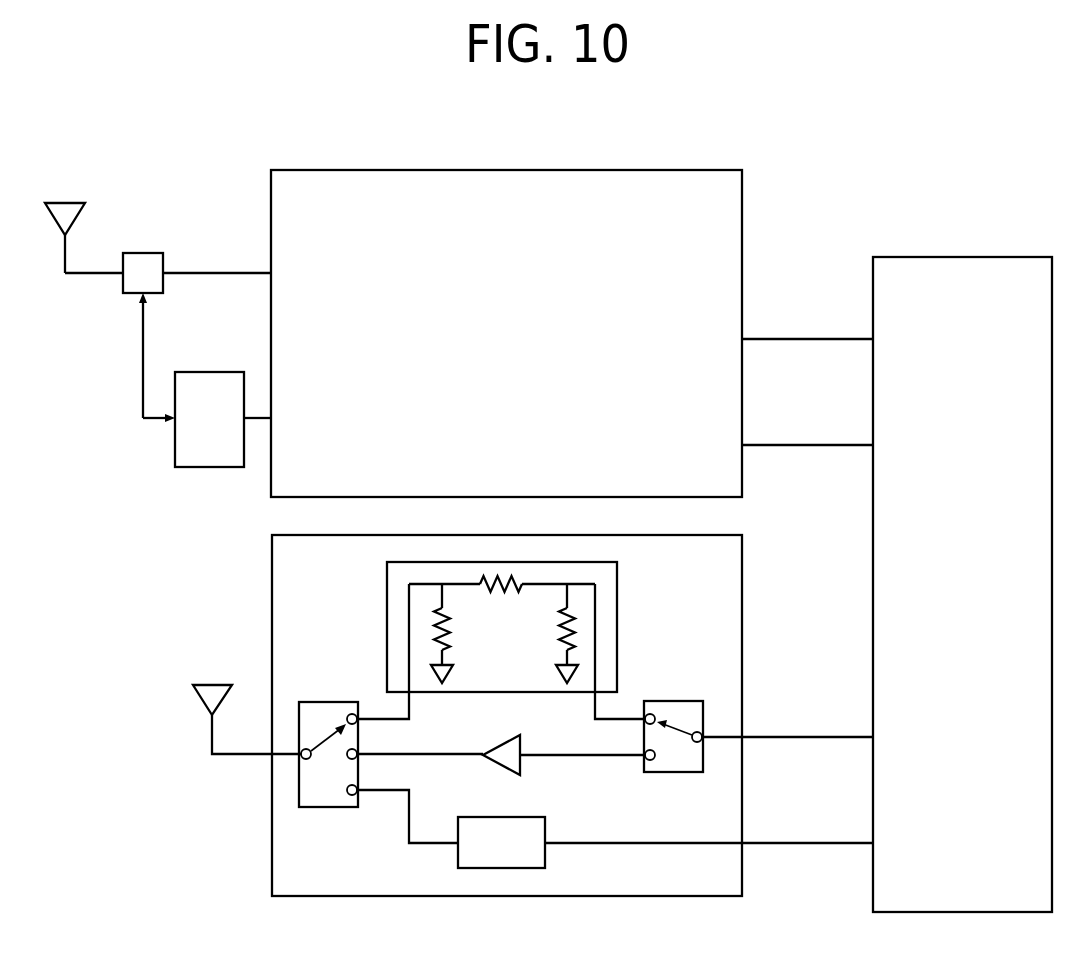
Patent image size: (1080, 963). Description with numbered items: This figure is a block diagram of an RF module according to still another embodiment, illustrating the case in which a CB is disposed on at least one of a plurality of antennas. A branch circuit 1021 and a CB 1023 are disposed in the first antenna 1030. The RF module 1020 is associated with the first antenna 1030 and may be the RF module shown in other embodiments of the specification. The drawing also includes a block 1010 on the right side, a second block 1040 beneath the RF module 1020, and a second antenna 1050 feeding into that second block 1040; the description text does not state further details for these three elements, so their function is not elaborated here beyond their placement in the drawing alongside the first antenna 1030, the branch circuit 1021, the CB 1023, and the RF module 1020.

The communication processor 1010 is at (960, 257).
The RF module 1020 is at (742, 192).
The branch circuit 1021 is at (143, 253).
The CB 1023 is at (210, 372).
The first antenna 1030 is at (63, 203).
The second RF front-end circuit 1040 is at (742, 560).
The second antenna 1050 is at (212, 685).